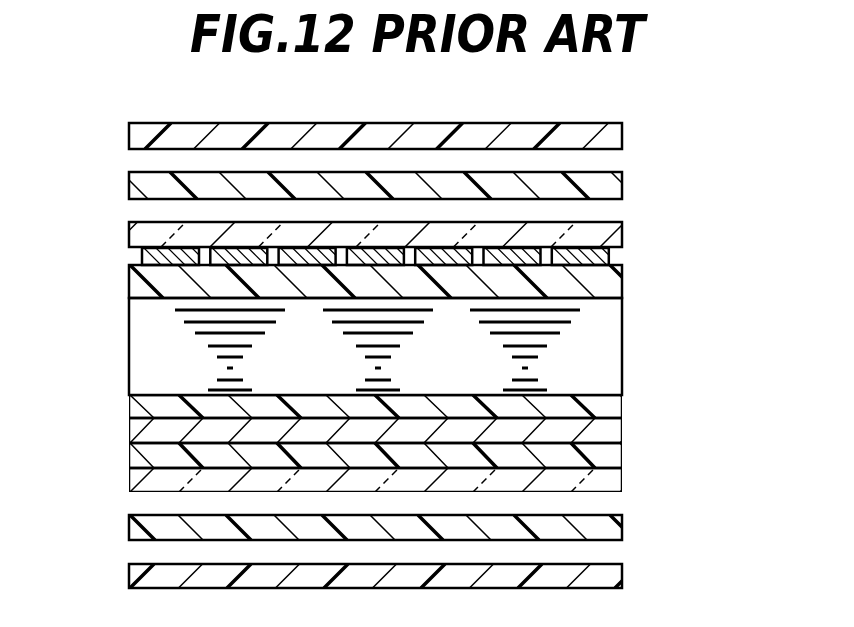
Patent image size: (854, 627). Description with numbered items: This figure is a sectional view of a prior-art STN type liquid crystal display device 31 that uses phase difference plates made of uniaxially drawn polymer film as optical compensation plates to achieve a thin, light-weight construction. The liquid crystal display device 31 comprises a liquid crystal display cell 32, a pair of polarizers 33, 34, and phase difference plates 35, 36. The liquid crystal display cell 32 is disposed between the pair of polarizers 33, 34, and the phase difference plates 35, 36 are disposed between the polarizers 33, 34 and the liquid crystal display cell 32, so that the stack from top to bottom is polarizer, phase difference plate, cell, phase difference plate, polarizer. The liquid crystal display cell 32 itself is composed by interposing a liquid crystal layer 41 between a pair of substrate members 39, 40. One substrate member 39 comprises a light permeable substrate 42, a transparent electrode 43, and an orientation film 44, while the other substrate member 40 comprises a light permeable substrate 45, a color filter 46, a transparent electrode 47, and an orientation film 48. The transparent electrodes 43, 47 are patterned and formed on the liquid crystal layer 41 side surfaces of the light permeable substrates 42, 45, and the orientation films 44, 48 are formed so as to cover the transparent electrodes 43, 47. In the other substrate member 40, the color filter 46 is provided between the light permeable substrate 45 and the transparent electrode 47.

The liquid crystal display device 31 is at (101, 121).
The liquid crystal display cell 32 is at (443, 365).
The polarizer 33 is at (622, 136).
The polarizer 34 is at (612, 573).
The phase difference plate 35 is at (622, 194).
The phase difference plate 36 is at (612, 524).
The substrate member 39 is at (416, 267).
The substrate member 40 is at (427, 449).
The liquid crystal layer 41 is at (607, 360).
The light permeable substrate 42 is at (619, 240).
The transparent electrode 43 is at (620, 265).
The orientation film 44 is at (612, 294).
The light permeable substrate 45 is at (401, 488).
The color filter 46 is at (616, 463).
The transparent electrode 47 is at (618, 433).
The orientation film 48 is at (616, 410).